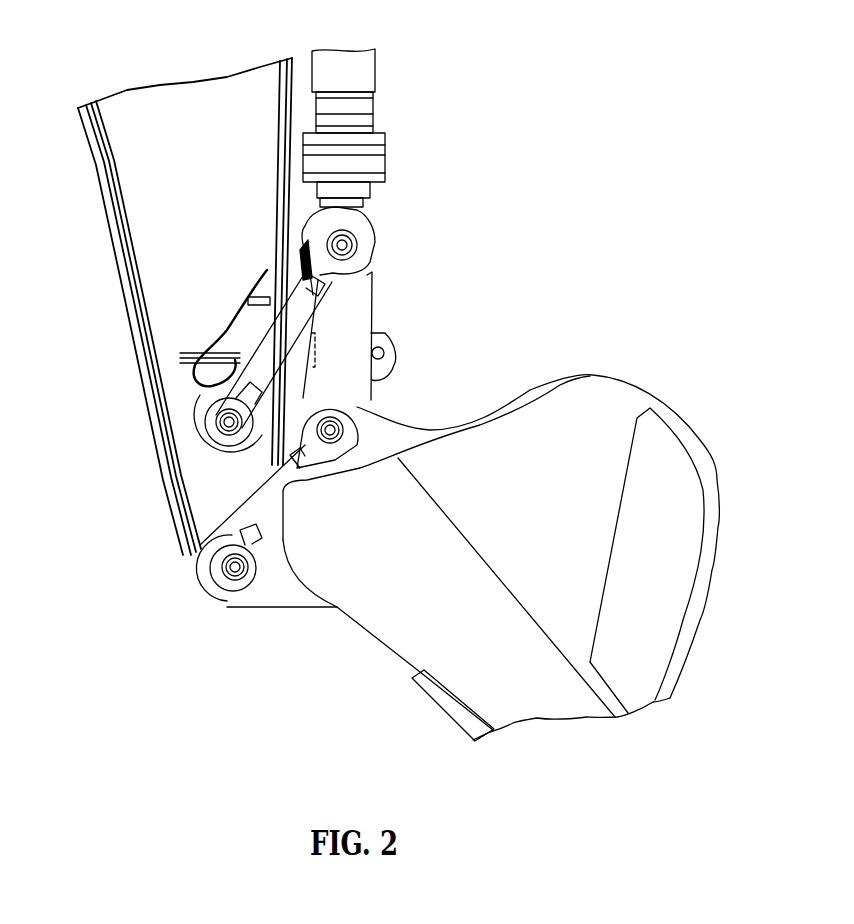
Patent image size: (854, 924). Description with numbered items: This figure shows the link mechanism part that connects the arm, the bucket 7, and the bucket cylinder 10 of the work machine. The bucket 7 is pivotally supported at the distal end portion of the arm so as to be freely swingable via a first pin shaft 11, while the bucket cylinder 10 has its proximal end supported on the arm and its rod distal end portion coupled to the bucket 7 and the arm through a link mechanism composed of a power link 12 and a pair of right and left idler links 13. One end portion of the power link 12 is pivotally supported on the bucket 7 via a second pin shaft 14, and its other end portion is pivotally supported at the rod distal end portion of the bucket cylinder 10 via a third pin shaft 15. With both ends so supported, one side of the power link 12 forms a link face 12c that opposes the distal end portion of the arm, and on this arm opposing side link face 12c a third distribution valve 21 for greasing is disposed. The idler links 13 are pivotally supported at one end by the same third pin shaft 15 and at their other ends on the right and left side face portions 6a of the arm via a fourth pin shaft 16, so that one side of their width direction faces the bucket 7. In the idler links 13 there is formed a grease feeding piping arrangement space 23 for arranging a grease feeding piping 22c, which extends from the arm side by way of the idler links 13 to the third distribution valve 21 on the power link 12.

The right and left side face portions of the arm 6a is at (185, 122).
The bucket cylinder 10 is at (357, 72).
The power link 12 is at (355, 307).
The third pin shaft 15 is at (352, 240).
The idler links 13 is at (262, 365).
The fourth pin shaft 16 is at (222, 422).
The second pin shaft 14 is at (372, 410).
The first pin shaft 11 is at (225, 580).
The link face 12c is at (290, 470).
The bucket 7 is at (598, 420).
The third distribution valve 21 is at (315, 357).
The grease feeding piping 22c is at (247, 337).
The grease feeding piping arrangement space 23 is at (250, 322).